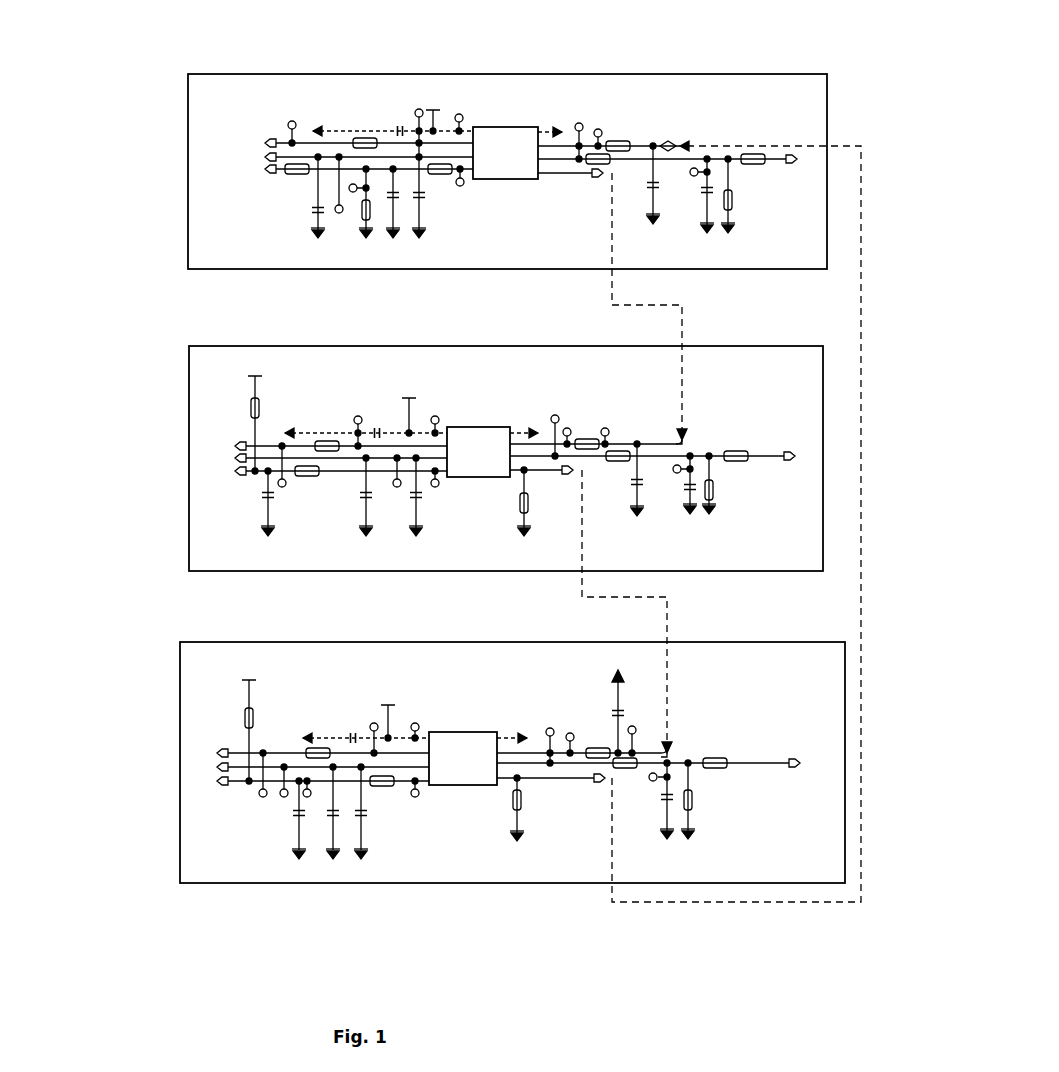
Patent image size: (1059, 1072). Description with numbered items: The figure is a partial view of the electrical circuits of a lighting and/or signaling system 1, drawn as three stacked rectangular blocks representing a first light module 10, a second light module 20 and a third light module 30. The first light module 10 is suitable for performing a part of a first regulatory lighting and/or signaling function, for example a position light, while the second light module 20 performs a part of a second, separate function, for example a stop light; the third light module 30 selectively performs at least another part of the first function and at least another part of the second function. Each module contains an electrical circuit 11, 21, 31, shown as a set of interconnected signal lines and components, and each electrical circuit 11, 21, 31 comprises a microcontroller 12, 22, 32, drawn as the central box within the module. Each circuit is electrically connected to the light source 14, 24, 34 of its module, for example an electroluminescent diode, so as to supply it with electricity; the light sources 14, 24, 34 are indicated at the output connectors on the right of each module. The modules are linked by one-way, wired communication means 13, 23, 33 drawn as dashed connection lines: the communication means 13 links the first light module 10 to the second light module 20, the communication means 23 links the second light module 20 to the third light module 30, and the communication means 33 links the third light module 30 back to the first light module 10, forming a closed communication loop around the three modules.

The lighting and/or signaling system 1 is at (116, 80).
The first light module 10 is at (202, 372).
The electrical circuit 11 is at (288, 381).
The microcontroller 12 is at (482, 427).
The communication means 13 is at (678, 596).
The light source 14 is at (797, 462).
The second light module 20 is at (188, 670).
The electrical circuit 21 is at (281, 676).
The microcontroller 22 is at (470, 732).
The communication means 23 is at (703, 904).
The light source 24 is at (802, 769).
The third light module 30 is at (202, 183).
The electrical circuit 31 is at (332, 109).
The microcontroller 32 is at (503, 127).
The communication means 33 is at (688, 306).
The light source 34 is at (798, 155).